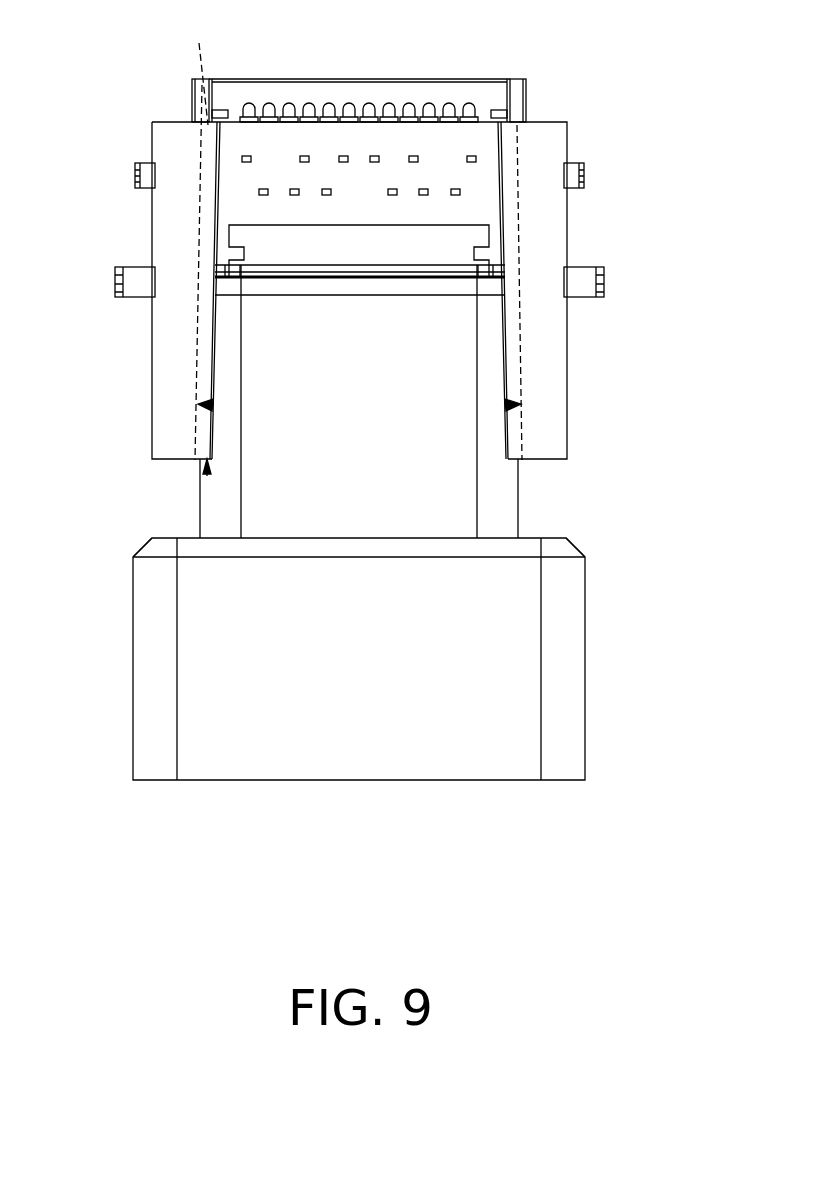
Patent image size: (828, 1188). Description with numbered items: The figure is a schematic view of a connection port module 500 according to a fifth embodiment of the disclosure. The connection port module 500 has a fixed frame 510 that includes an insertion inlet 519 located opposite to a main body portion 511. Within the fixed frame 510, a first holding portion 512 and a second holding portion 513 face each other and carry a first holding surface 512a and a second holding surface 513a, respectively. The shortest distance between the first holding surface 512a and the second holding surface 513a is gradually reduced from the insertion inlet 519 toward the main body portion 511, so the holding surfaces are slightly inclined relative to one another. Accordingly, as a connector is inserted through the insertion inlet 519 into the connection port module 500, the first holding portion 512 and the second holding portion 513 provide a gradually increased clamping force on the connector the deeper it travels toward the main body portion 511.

The connection port module 500 is at (695, 864).
The fixed frame 510 is at (168, 112).
The main body portion 511 is at (198, 68).
The first holding portion 512 is at (168, 357).
The second holding portion 513 is at (550, 357).
The first holding surface 512a is at (212, 404).
The second holding surface 513a is at (506, 404).
The insertion inlet 519 is at (206, 476).